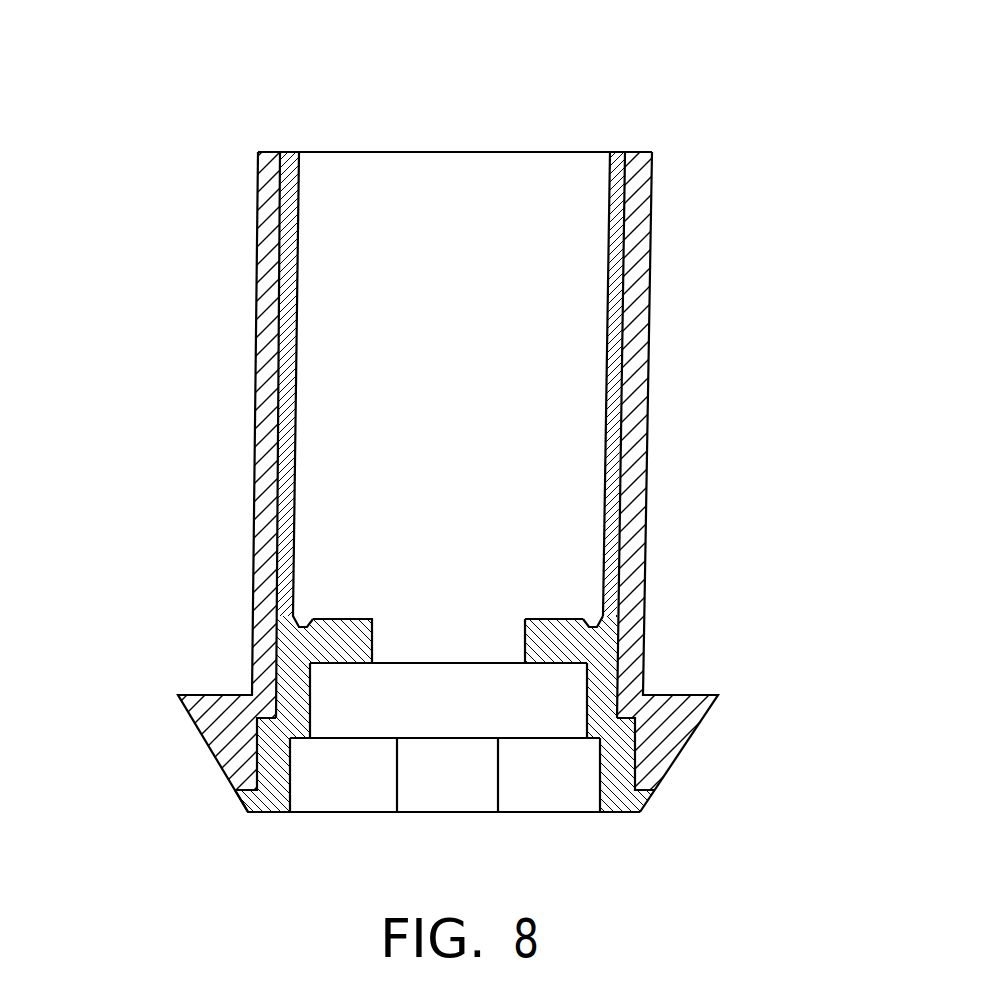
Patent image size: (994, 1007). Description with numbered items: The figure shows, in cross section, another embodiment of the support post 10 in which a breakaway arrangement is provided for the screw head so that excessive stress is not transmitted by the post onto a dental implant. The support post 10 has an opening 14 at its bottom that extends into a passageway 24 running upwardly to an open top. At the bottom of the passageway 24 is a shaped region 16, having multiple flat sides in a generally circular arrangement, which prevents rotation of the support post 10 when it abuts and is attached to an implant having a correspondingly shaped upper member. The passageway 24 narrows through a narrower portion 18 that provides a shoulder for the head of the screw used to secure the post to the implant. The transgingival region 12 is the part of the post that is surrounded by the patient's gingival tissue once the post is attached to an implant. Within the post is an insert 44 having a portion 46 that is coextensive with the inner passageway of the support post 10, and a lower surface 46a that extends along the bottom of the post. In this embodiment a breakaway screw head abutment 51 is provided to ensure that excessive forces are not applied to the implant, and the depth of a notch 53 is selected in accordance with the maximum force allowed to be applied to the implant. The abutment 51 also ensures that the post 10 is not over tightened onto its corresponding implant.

The support post 10 is at (454, 484).
The transgingival region 12 is at (682, 760).
The opening 14 is at (300, 834).
The shaped region 16 is at (560, 782).
The narrower portion 18 is at (427, 571).
The passageway 24 is at (420, 215).
The insert 44 is at (566, 387).
The portion 46 is at (365, 384).
The lower surface 46a is at (248, 807).
The breakaway screw head abutment 51 is at (423, 621).
The notch 53 is at (590, 627).